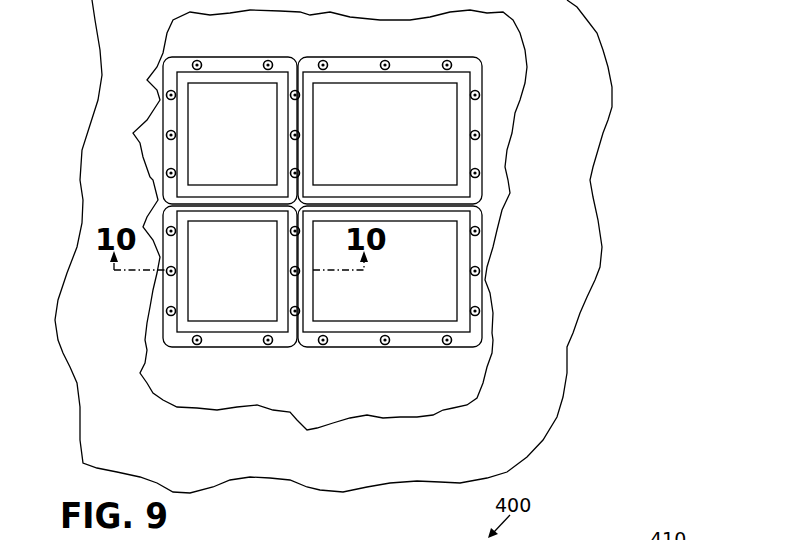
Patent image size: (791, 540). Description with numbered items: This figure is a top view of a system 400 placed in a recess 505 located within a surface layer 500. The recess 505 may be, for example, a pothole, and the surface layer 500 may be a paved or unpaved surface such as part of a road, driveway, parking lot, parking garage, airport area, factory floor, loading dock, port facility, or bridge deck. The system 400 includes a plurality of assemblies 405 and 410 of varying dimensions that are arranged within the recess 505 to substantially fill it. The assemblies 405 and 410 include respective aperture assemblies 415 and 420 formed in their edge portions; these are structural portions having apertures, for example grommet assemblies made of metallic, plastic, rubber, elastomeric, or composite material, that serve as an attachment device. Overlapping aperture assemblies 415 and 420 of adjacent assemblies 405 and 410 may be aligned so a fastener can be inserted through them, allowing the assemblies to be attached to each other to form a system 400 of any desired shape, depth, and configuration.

The system 400 is at (364, 204).
The assembly 405 is at (156, 146).
The assembly 410 is at (493, 106).
The aperture assembly 415 is at (165, 93).
The aperture assembly 420 is at (480, 134).
The surface layer 500 is at (585, 265).
The recess 505 is at (497, 200).